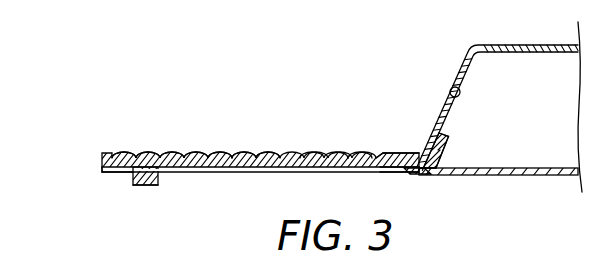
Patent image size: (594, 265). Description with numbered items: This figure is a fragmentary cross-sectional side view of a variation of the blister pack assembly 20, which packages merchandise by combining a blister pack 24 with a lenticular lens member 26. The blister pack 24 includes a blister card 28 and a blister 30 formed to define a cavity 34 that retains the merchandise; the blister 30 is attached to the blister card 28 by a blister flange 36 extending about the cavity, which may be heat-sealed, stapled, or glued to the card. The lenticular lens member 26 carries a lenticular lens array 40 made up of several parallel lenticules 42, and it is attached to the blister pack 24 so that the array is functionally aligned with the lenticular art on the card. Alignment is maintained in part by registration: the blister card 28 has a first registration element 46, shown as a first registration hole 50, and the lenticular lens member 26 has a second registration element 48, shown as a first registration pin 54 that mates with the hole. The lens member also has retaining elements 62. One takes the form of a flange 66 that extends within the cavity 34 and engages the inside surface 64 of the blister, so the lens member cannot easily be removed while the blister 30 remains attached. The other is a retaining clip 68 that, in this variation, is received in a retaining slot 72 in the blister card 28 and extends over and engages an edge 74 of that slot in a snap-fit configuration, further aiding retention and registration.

The blister pack assembly 20 is at (335, 68).
The blister pack 24 is at (372, 72).
The lenticular lens member 26 is at (150, 100).
The blister card 28 is at (526, 178).
The blister 30 is at (470, 47).
The cavity 34 is at (522, 60).
The blister flange 36 is at (398, 152).
The lenticular lens array 40 is at (172, 107).
The lenticules 42 is at (282, 153).
The first registration element 46 is at (400, 184).
The second registration element 48 is at (400, 184).
The first registration hole 50 is at (422, 168).
The first registration pin 54 is at (416, 172).
The retaining element 62 is at (455, 135).
The inside surface 64 is at (451, 86).
The flange 66 is at (446, 151).
The retaining clip 68 is at (145, 186).
The retaining slot 72 is at (113, 171).
The edge 74 is at (160, 171).